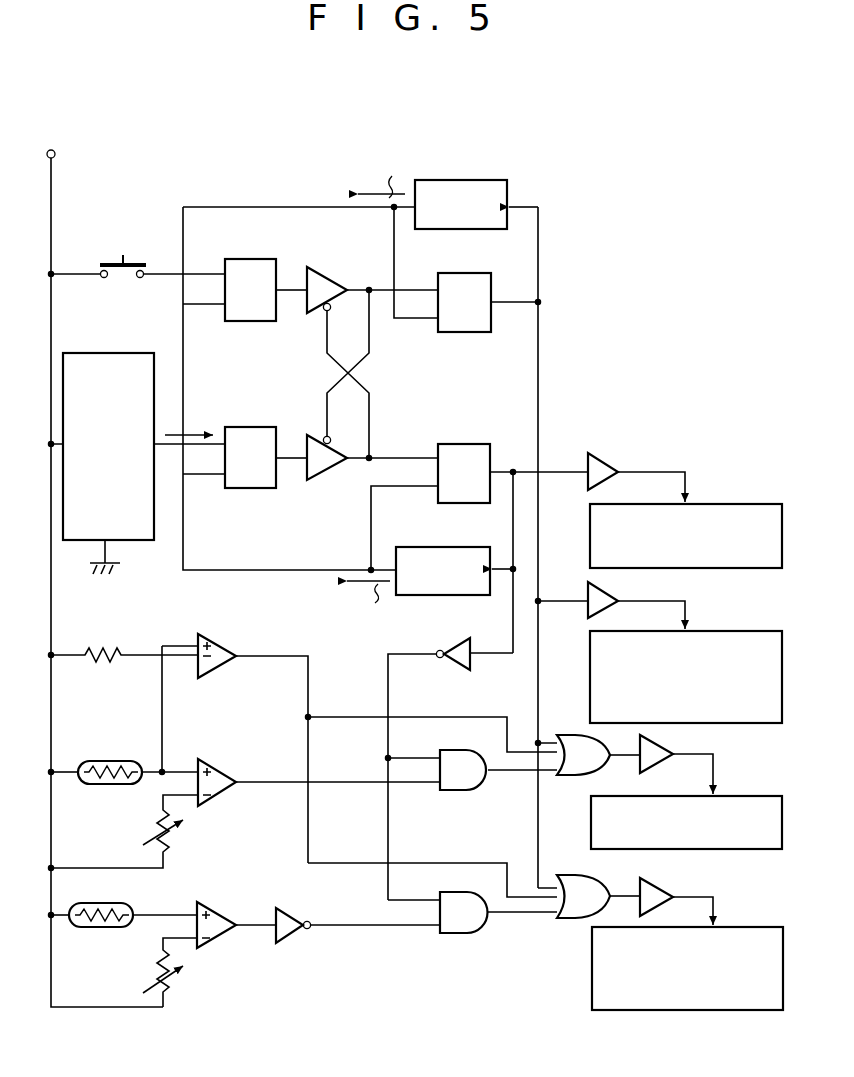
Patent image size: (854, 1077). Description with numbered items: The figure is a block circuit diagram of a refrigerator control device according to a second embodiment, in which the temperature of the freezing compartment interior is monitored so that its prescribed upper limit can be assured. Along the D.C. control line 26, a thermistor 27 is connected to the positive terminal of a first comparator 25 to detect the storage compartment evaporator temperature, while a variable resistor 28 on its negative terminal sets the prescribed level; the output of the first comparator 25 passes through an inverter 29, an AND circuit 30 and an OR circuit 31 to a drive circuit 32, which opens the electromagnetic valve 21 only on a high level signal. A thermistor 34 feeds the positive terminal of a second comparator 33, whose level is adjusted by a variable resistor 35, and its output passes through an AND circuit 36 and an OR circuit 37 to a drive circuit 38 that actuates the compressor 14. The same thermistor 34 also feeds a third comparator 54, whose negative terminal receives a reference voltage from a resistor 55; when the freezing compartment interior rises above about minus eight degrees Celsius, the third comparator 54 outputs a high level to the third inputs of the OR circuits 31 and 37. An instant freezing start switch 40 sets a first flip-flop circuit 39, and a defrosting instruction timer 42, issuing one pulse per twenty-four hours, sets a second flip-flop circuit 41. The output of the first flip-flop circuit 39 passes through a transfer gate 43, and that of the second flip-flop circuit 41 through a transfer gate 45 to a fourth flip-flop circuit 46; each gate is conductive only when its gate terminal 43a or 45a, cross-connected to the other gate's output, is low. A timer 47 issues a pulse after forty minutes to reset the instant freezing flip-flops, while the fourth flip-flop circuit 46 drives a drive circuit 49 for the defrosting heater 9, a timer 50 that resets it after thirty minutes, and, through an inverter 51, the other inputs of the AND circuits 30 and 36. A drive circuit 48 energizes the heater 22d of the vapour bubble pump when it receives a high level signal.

The defrosting heater 9 is at (720, 504).
The compressor 14 is at (747, 851).
The electromagnetic valve 21 is at (678, 1012).
The heater of the vapour bubble pump 22d is at (723, 631).
The first comparator 25 is at (224, 909).
The D.C. control line 26 is at (53, 598).
The thermistor 27 is at (91, 929).
The variable resistor 28 is at (182, 980).
The inverter 29 is at (295, 945).
The AND circuit 30 is at (460, 935).
The OR circuit 31 is at (566, 920).
The drive circuit 32 is at (658, 890).
The second comparator 33 is at (214, 763).
The thermistor 34 is at (100, 786).
The variable resistor 35 is at (175, 842).
The AND circuit 36 is at (454, 792).
The OR circuit 37 is at (566, 778).
The drive circuit 38 is at (676, 736).
The first flip-flop circuit 39 is at (247, 259).
The instant freezing start switch 40 is at (123, 257).
The second flip-flop circuit 41 is at (243, 427).
The defrosting instruction timer 42 is at (95, 353).
The transfer gate 43 is at (322, 268).
The gate terminal 43a is at (321, 311).
The transfer gate 45 is at (459, 273).
The gate terminal 45a is at (323, 436).
The fourth flip-flop circuit 46 is at (461, 444).
The timer 47 is at (453, 180).
The drive circuit 48 is at (584, 606).
The drive circuit 49 is at (598, 453).
The timer 50 is at (413, 547).
The inverter 51 is at (450, 672).
The third comparator 54 is at (222, 648).
The resistor 55 is at (98, 662).